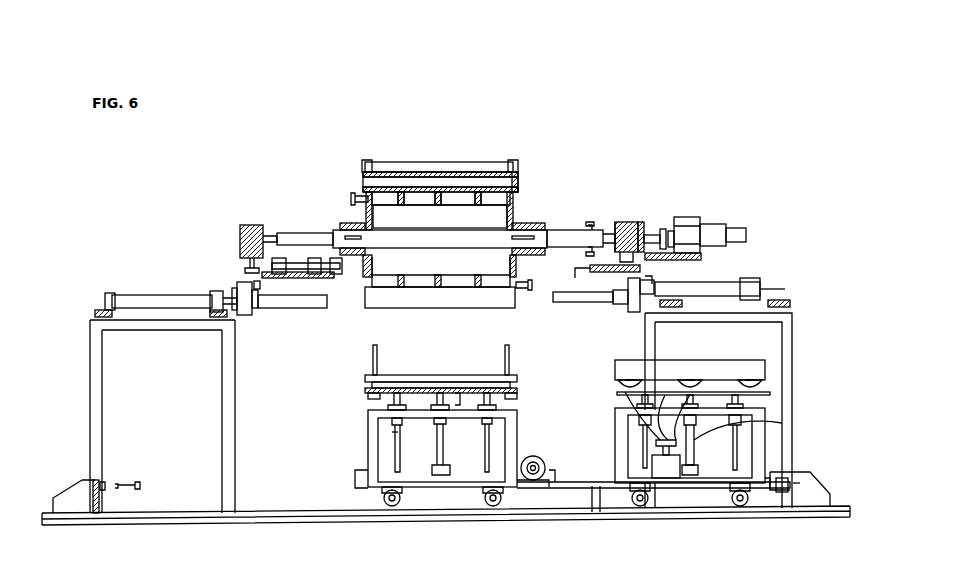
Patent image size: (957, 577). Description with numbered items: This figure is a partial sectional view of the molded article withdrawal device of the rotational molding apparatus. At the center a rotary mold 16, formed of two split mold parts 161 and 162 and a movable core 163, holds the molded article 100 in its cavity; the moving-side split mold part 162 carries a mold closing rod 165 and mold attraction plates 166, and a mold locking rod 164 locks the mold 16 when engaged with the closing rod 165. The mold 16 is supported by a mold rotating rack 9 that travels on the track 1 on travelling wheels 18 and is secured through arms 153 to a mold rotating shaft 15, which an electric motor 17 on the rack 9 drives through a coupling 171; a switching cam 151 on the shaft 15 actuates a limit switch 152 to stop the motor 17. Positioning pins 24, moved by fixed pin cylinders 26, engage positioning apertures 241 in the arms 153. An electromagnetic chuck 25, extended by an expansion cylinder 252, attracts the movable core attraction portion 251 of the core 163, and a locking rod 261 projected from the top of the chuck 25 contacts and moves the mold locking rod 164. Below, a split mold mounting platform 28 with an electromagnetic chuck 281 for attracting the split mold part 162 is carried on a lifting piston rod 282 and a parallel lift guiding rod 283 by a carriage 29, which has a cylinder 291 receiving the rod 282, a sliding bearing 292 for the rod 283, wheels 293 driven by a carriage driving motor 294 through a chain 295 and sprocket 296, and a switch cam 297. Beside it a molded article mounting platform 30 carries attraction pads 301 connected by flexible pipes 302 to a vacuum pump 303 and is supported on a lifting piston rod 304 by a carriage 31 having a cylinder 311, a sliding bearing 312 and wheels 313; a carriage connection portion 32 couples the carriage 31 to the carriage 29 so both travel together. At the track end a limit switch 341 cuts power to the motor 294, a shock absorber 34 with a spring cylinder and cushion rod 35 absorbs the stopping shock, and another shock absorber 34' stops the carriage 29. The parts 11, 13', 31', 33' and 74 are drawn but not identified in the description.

The track 1 is at (250, 262).
The mold rotating rack 9 is at (620, 222).
The head body 11 is at (458, 205).
The slide bar 13' is at (299, 317).
The mold rotating shaft 15 is at (566, 230).
The rotary mold 16 is at (380, 162).
The electric motor 17 is at (690, 222).
The travelling wheels 18 is at (240, 240).
The positioning pins 24 is at (405, 252).
The electromagnetic chuck 25 is at (634, 312).
The fixed pin cylinder 26 is at (300, 280).
The split mold mounting platform 28 is at (440, 393).
The carriage 29 is at (368, 431).
The molded article mounting platform 30 is at (618, 385).
The carriage 31 is at (666, 445).
The ring 31' is at (267, 321).
The carriage connection portion 32 is at (590, 515).
The disc 33' is at (243, 317).
The shock absorber means 34 is at (446, 509).
The shock absorber 34' is at (283, 310).
The cushion rod 35 is at (98, 520).
The bracket 74 is at (770, 492).
The molded article 100 is at (468, 177).
The switching cam 151 is at (591, 222).
The limit switch 152 is at (590, 270).
The arms 153 is at (366, 200).
The split mold part 161 is at (484, 308).
The split mold part 162 is at (430, 172).
The movable core 163 is at (518, 178).
The mold locking rod 164 is at (353, 198).
The mold closing rod 165 is at (373, 353).
The mold attraction plates 166 is at (366, 162).
The coupling 171 is at (664, 229).
The positioning apertures 241 is at (345, 223).
The movable core attraction portion 251 is at (237, 290).
The expansion cylinder 252 is at (160, 294).
The locking rod 261 is at (618, 304).
The electromagnetic chuck 281 is at (368, 396).
The lifting piston rod 282 is at (460, 393).
The lift guiding rod 283 is at (395, 450).
The cylinder 291 is at (444, 428).
The sliding bearing 292 is at (400, 422).
The wheels 293 is at (404, 508).
The carriage driving motor 294 is at (540, 456).
The chain 295 is at (525, 490).
The sprocket 296 is at (556, 490).
The switch cam 297 is at (356, 478).
The molded article attraction pads 301 is at (625, 375).
The flexible pipe 302 is at (617, 393).
The vacuum pump 303 is at (652, 465).
The lifting piston rod 304 is at (690, 392).
The cylinder 311 is at (696, 470).
The sliding bearing 312 is at (782, 420).
The wheels 313 is at (638, 508).
The limit switch 341 is at (106, 482).